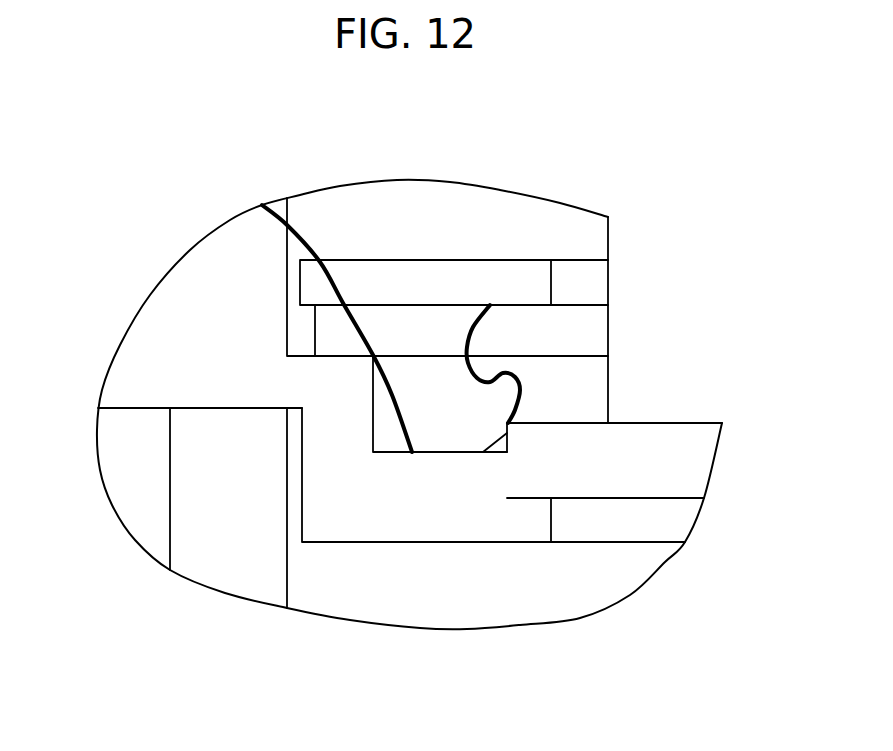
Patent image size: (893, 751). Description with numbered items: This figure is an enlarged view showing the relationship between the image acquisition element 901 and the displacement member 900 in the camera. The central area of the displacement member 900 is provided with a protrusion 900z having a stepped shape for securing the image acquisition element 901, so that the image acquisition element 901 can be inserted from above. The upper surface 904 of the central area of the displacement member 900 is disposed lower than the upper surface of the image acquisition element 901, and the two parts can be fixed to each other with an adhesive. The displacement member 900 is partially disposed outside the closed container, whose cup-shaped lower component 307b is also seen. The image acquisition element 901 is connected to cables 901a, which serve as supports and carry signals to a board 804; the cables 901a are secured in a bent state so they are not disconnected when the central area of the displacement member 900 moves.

The displacement member 900 is at (198, 288).
The board 804 is at (523, 275).
The cables 901a is at (521, 382).
The upper surface 904 is at (438, 443).
The image acquisition element 901 is at (697, 462).
The protrusion 900z is at (433, 517).
The lower component 307b is at (188, 538).